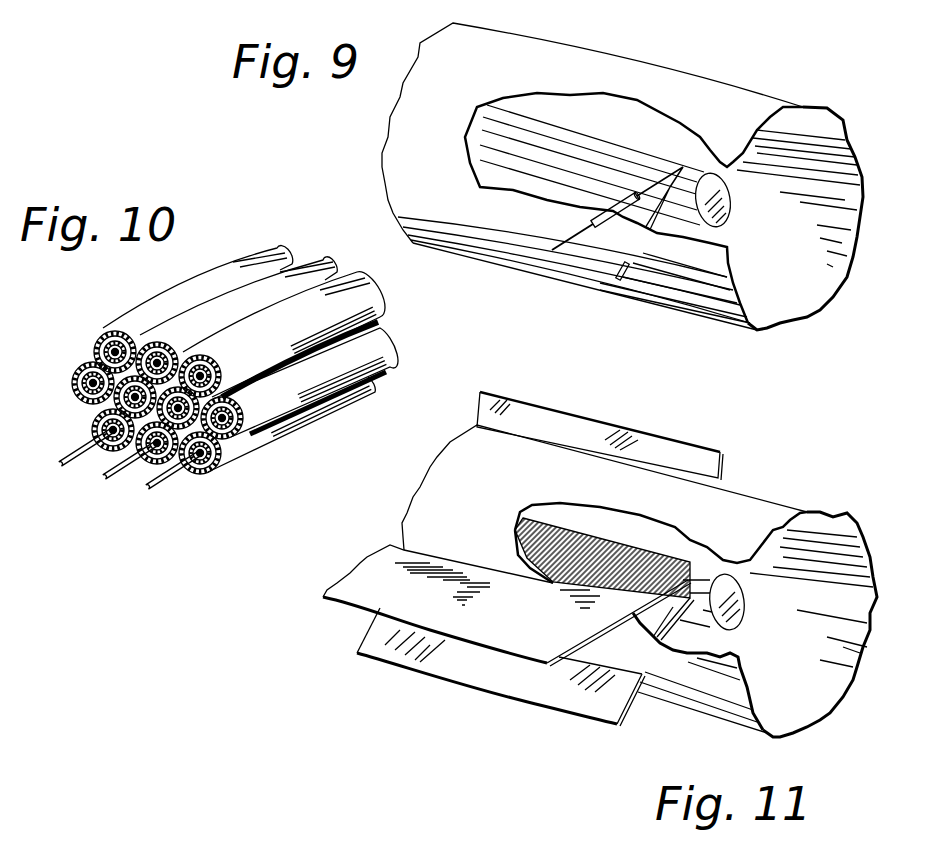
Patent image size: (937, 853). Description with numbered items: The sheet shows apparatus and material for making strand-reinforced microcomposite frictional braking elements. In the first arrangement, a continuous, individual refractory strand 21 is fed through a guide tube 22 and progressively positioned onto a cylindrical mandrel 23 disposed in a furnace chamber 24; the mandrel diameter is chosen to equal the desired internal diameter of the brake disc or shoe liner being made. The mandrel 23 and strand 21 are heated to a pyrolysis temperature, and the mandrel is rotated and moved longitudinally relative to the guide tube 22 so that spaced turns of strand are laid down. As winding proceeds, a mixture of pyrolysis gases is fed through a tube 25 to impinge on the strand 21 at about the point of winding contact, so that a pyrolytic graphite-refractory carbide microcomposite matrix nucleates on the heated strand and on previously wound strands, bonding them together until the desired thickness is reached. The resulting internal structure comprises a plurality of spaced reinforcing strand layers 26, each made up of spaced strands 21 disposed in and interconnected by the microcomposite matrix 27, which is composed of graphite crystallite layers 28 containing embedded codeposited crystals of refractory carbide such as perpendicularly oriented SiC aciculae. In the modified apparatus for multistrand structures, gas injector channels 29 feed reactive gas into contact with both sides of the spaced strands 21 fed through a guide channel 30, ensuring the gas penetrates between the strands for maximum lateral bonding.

In FIG. 9, the refractory strand 21 is at (557, 241).
In FIG. 10, the refractory strand 21 is at (97, 342).
In FIG. 11, the refractory strand 21 is at (697, 570).
In FIG. 9, the guide tube 22 is at (610, 232).
In FIG. 9, the cylindrical mandrel 23 is at (714, 182).
In FIG. 11, the cylindrical mandrel 23 is at (752, 577).
In FIG. 9, the furnace chamber 24 is at (768, 279).
In FIG. 11, the furnace chamber 24 is at (776, 692).
In FIG. 9, the tube 25 is at (628, 283).
In FIG. 10, the reinforcing strand layers 26 is at (74, 447).
In FIG. 10, the microcomposite matrix 27 is at (216, 481).
In FIG. 10, the graphite crystallite layers 28 is at (242, 454).
In FIG. 11, the gas injector channels 29 is at (607, 437).
In FIG. 11, the guide channel 30 is at (362, 577).